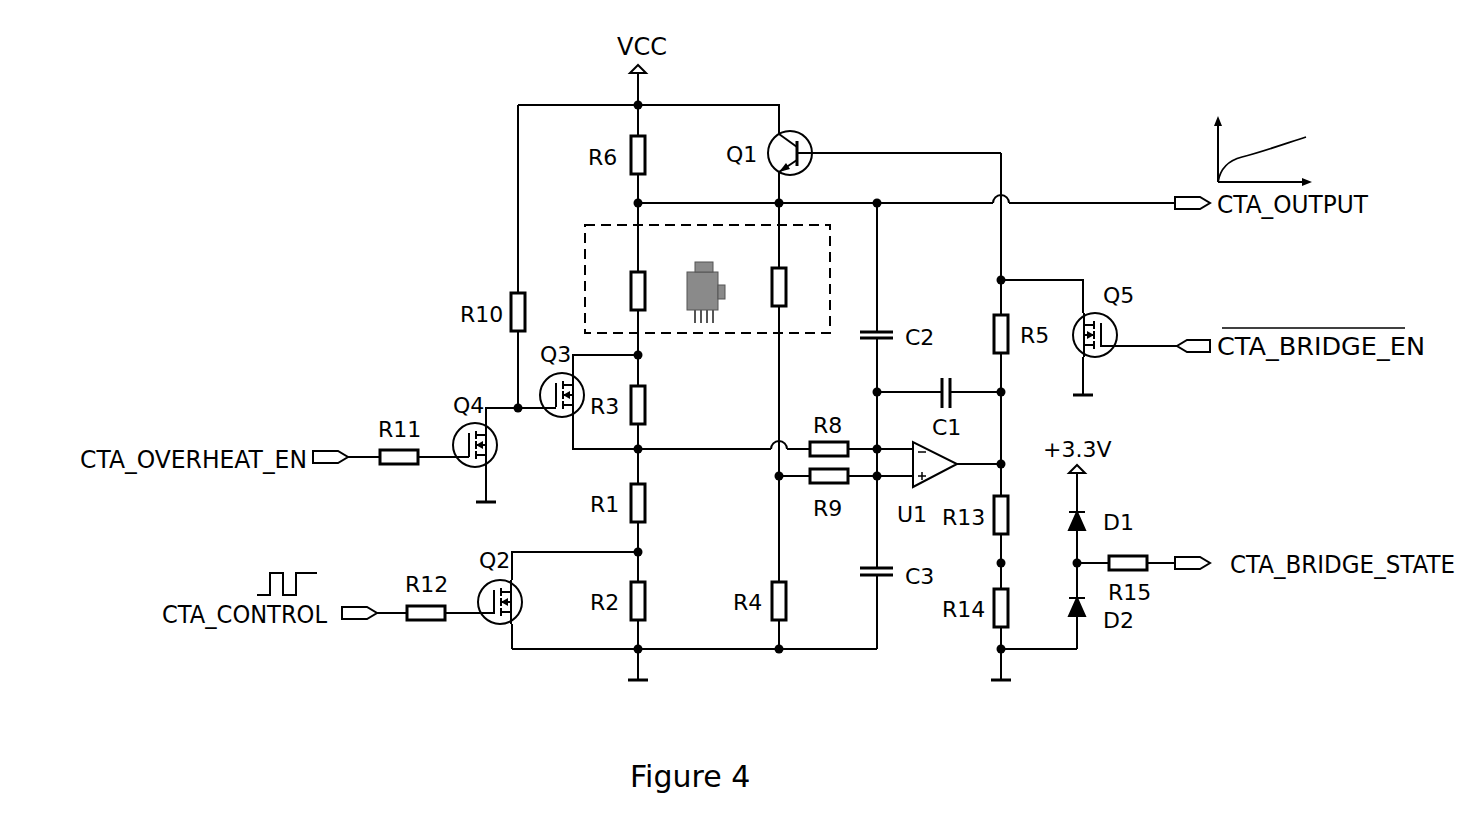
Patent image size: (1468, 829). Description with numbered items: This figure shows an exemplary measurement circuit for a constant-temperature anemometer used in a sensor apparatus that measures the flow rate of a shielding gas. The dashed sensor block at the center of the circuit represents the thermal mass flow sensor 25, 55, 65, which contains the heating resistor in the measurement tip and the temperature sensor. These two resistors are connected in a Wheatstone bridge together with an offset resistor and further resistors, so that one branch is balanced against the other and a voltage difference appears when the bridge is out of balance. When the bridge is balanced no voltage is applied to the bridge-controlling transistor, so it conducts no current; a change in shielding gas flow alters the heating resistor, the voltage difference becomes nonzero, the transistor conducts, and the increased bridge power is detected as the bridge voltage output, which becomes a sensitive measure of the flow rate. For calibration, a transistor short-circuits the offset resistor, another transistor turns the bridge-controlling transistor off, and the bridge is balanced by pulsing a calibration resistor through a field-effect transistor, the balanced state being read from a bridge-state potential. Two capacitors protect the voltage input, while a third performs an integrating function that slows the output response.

The thermal mass flow sensor 25 is at (600, 209).
The thermal mass flow sensor 55 is at (600, 209).
The thermal mass flow sensor 65 is at (593, 221).